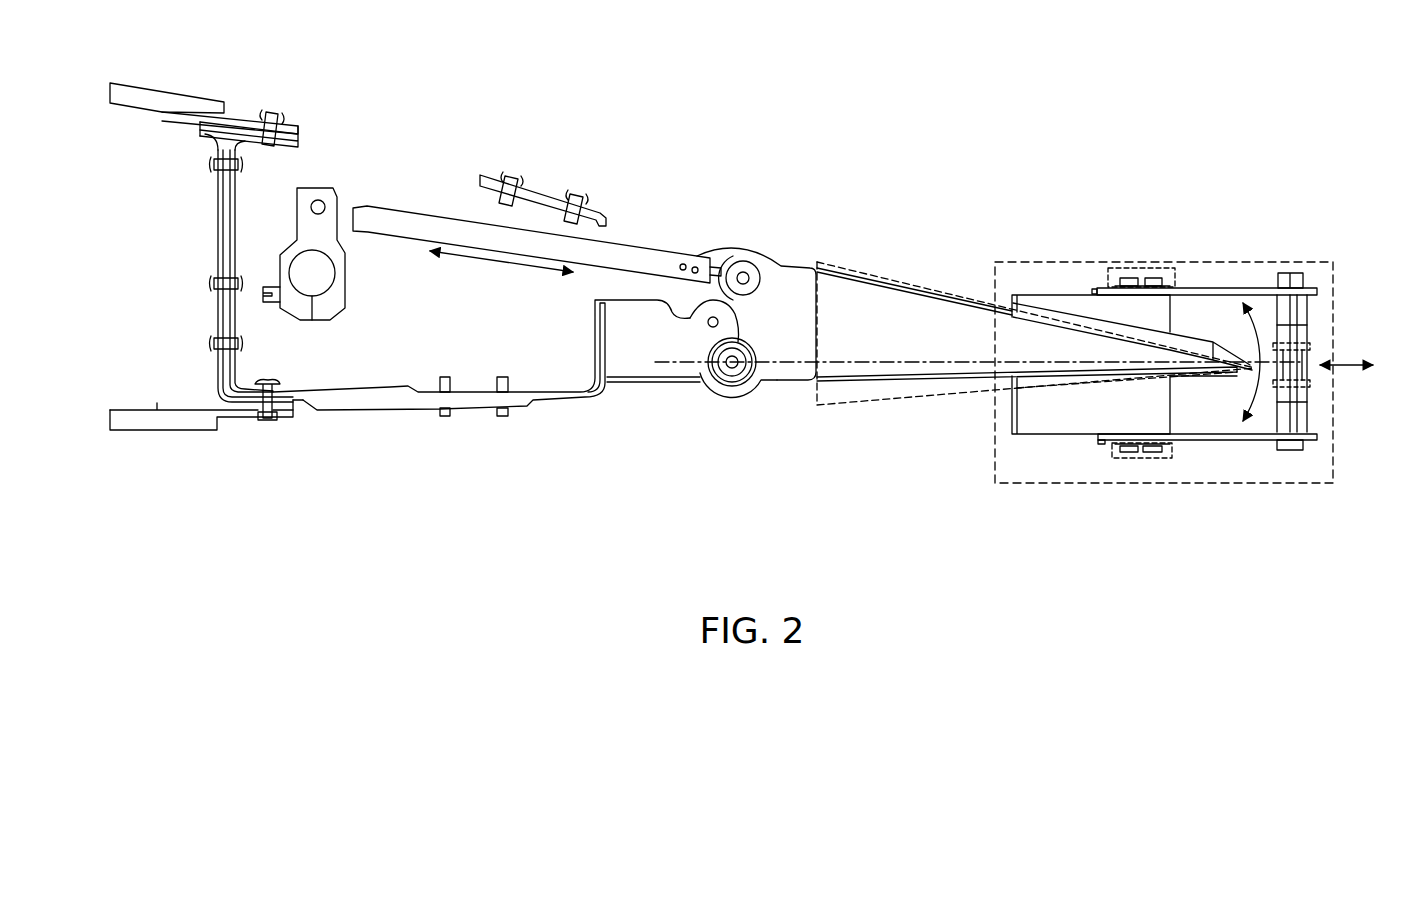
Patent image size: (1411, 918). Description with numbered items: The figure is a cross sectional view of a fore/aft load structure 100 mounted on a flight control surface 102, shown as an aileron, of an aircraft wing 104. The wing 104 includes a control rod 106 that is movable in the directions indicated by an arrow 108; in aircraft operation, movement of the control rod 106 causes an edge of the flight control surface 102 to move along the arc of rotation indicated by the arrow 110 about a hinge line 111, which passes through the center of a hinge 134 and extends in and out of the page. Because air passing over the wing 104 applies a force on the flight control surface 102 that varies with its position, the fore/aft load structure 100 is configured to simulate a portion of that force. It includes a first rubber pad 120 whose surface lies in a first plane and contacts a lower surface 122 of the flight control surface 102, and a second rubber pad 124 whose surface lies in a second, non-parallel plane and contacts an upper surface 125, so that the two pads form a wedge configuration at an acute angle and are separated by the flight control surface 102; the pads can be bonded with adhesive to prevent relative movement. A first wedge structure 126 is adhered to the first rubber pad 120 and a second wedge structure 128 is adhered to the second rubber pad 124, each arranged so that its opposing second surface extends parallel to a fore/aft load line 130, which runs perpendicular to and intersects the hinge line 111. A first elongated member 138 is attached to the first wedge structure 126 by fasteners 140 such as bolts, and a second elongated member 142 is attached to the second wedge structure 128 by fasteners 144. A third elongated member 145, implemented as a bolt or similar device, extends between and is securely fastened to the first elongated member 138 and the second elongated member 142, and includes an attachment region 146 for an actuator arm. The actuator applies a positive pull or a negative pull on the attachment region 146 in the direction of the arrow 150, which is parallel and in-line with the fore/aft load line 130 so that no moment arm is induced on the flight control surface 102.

The fore/aft load structure 100 is at (1078, 260).
The flight control surface 102 is at (843, 262).
The wing 104 is at (320, 86).
The control rod 106 is at (660, 253).
The arrow 108 is at (503, 262).
The arrow 110 is at (1258, 332).
The hinge line 111 is at (732, 367).
The first rubber pad 120 is at (1170, 380).
The lower surface 122 is at (868, 382).
The second rubber pad 124 is at (1168, 343).
The upper surface 125 is at (903, 284).
The first wedge structure 126 is at (1010, 423).
The second wedge structure 128 is at (1010, 296).
The fore/aft load line 130 is at (797, 360).
The hinge 134 is at (707, 357).
The first elongated member 138 is at (1215, 442).
The fasteners 140 is at (1147, 460).
The second elongated member 142 is at (1210, 286).
The fasteners 144 is at (1143, 265).
The third elongated member 145 is at (1308, 298).
The attachment region 146 is at (1313, 345).
The arrow 150 is at (1350, 370).